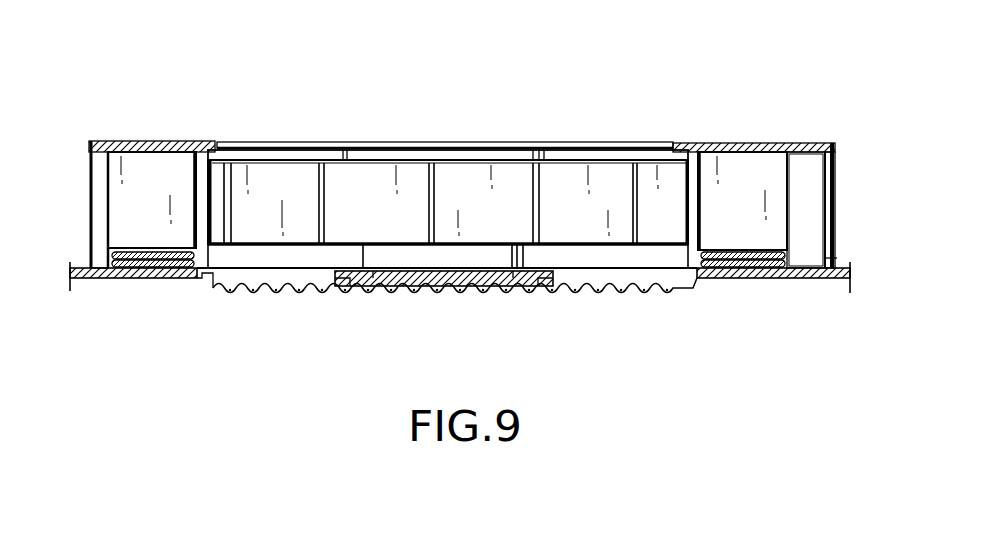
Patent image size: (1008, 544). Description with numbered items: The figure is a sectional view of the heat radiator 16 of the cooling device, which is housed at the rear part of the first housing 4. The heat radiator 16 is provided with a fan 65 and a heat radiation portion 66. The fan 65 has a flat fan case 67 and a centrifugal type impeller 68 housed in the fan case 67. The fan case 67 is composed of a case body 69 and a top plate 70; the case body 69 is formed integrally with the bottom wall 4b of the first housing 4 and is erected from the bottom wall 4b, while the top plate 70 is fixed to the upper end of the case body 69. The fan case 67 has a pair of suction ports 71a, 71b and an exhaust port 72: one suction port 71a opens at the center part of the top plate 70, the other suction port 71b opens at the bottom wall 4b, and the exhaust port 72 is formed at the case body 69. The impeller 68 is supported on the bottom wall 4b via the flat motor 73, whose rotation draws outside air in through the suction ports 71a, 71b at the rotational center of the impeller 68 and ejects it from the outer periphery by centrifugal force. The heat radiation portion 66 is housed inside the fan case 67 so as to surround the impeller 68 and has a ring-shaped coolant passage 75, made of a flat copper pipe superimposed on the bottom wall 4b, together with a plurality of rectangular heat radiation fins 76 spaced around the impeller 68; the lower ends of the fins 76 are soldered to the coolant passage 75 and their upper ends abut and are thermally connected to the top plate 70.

The heat radiator 16 is at (136, 133).
The heat radiation fin 76 is at (183, 173).
The suction port 71a is at (285, 140).
The centrifugal type impeller 68 is at (388, 168).
The fan 65 is at (594, 140).
The fan case 67 is at (872, 72).
The top plate 70 is at (796, 150).
The case body 69 is at (836, 170).
The heat radiation portion 66 is at (789, 199).
The exhaust port 72 is at (102, 203).
The first housing 4 is at (95, 280).
The suction port 71b is at (318, 285).
The flat motor 73 is at (454, 256).
The coolant passage 75 is at (722, 282).
The bottom wall 4b is at (811, 280).